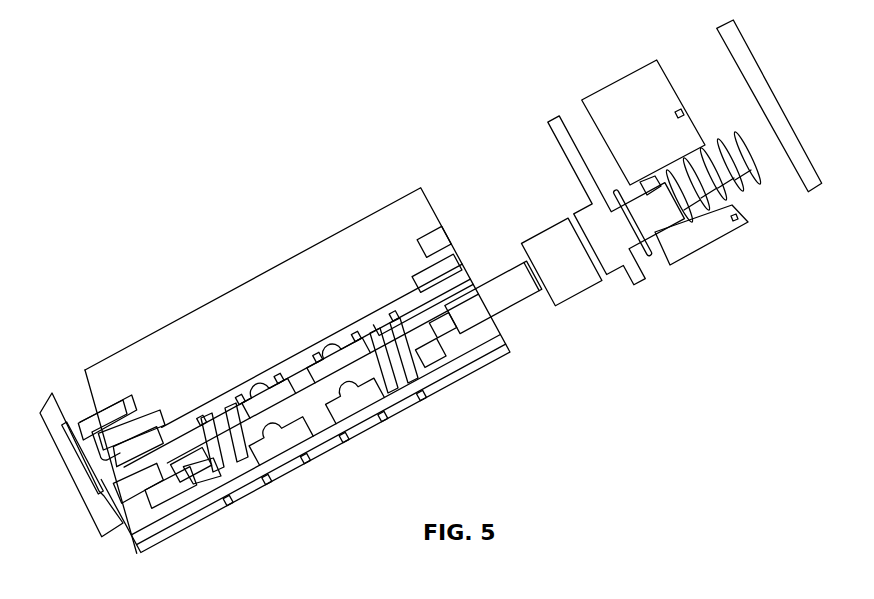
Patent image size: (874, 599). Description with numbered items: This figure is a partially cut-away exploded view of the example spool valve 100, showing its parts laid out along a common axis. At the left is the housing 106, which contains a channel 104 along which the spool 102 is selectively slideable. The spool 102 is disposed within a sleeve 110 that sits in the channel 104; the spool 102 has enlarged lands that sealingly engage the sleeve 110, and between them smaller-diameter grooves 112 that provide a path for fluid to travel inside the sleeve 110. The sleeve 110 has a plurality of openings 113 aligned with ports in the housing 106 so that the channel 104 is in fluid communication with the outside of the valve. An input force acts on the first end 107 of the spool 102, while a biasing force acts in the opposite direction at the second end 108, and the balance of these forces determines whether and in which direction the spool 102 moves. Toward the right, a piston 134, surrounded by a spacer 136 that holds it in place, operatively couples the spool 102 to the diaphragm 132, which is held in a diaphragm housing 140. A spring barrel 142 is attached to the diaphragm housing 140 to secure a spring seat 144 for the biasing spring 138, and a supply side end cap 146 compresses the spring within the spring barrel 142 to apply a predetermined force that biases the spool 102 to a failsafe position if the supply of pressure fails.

The spool valve 100 is at (130, 194).
The spool 102 is at (266, 413).
The channel 104 is at (487, 298).
The housing 106 is at (121, 359).
The first end 107 is at (210, 478).
The second end 108 is at (425, 357).
The sleeve 110 is at (218, 400).
The grooves 112 is at (270, 388).
The openings 113 is at (368, 410).
The diaphragm 132 is at (650, 260).
The piston 134 is at (510, 305).
The spacer 136 is at (550, 233).
The biasing spring 138 is at (758, 198).
The diaphragm housing 140 is at (553, 140).
The spring barrel 142 is at (612, 90).
The spring seat 144 is at (684, 224).
The supply side end cap 146 is at (742, 66).